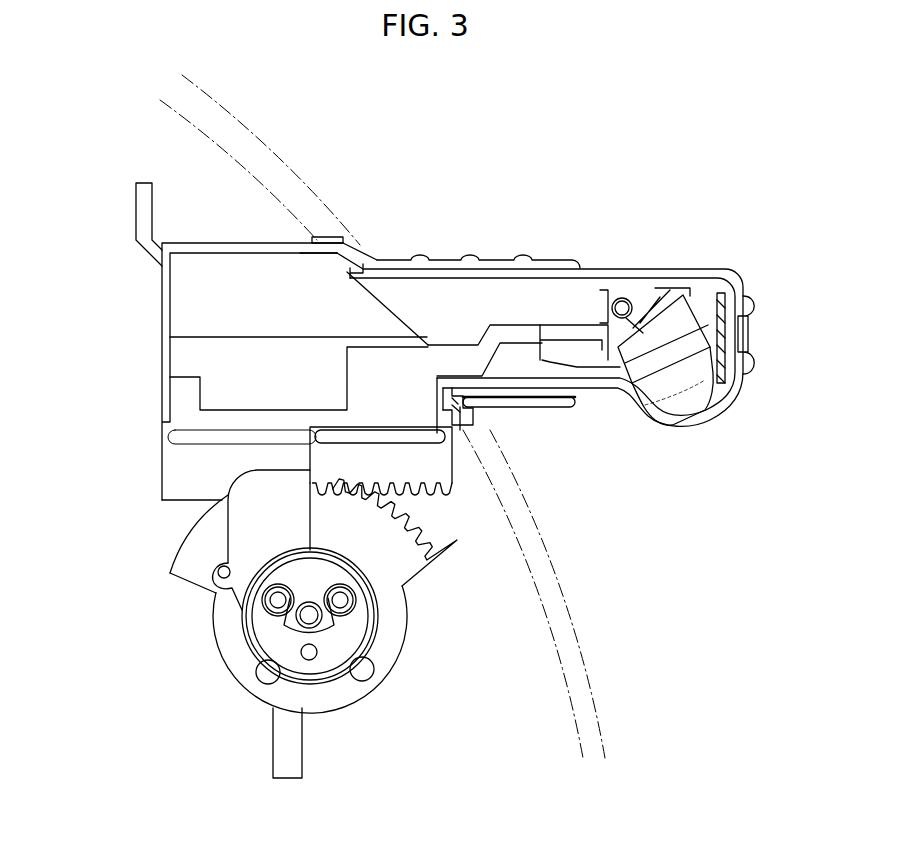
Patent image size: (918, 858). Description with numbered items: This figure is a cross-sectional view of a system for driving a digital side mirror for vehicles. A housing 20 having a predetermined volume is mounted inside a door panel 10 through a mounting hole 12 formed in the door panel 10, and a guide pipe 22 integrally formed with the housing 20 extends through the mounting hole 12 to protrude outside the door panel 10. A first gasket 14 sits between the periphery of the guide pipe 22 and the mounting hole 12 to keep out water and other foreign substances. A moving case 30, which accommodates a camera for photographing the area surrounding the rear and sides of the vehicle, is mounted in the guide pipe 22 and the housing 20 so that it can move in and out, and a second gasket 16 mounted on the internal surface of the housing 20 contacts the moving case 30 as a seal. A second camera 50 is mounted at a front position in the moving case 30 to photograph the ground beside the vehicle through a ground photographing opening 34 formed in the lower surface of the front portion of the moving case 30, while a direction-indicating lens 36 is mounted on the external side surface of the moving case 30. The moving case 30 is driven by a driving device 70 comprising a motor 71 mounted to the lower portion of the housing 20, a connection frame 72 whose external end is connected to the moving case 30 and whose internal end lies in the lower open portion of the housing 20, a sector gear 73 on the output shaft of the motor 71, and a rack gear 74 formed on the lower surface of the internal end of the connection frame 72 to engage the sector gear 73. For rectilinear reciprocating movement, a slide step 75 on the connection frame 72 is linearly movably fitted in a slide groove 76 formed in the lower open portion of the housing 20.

The door panel 10 is at (250, 127).
The mounting hole 12 is at (330, 240).
The first gasket 14 is at (373, 255).
The second gasket 16 is at (333, 268).
The housing 20 is at (150, 352).
The guide pipe 22 is at (445, 263).
The moving case 30 is at (660, 268).
The ground photographing opening 34 is at (677, 415).
The direction-indicating lens 36 is at (700, 413).
The second camera 50 is at (750, 320).
The driving device 70 is at (192, 650).
The motor 71 is at (398, 660).
The connection frame 72 is at (453, 343).
The sector gear 73 is at (420, 547).
The rack gear 74 is at (455, 500).
The slide step 75 is at (317, 432).
The slide groove 76 is at (190, 440).